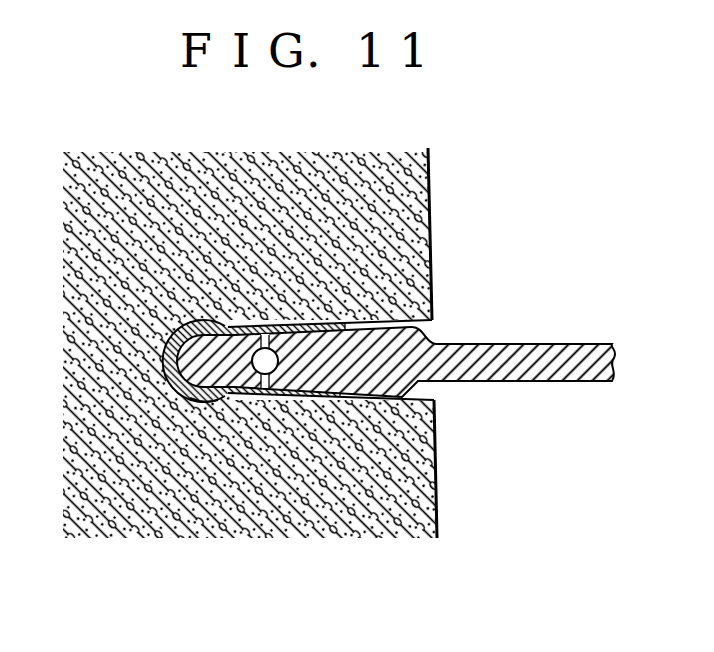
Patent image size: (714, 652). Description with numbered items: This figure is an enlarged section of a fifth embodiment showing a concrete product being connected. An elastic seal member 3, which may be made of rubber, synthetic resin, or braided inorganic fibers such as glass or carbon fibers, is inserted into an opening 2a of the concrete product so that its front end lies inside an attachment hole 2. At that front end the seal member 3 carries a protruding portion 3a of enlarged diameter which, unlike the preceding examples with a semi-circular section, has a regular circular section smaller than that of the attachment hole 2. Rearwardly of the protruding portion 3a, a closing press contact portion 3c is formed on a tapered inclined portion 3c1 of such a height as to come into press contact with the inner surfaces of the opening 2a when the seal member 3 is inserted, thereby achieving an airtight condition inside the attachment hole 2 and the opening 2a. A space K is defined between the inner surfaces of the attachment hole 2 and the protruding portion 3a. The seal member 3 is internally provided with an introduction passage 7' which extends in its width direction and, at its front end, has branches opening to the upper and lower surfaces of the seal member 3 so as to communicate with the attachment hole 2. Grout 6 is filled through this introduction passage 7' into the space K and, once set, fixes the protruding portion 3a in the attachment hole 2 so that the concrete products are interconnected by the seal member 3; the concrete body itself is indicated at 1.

The concrete body 1 is at (298, 341).
The introduction passage 7' is at (382, 297).
The tapered inclined portion 3c1 is at (433, 272).
The opening 2a is at (410, 328).
The seal member 3 is at (390, 398).
The closing press contact portion 3c is at (437, 440).
The attachment hole 2 is at (231, 452).
The protruding portion 3a is at (199, 396).
The space K is at (203, 401).
The grout 6 is at (230, 397).